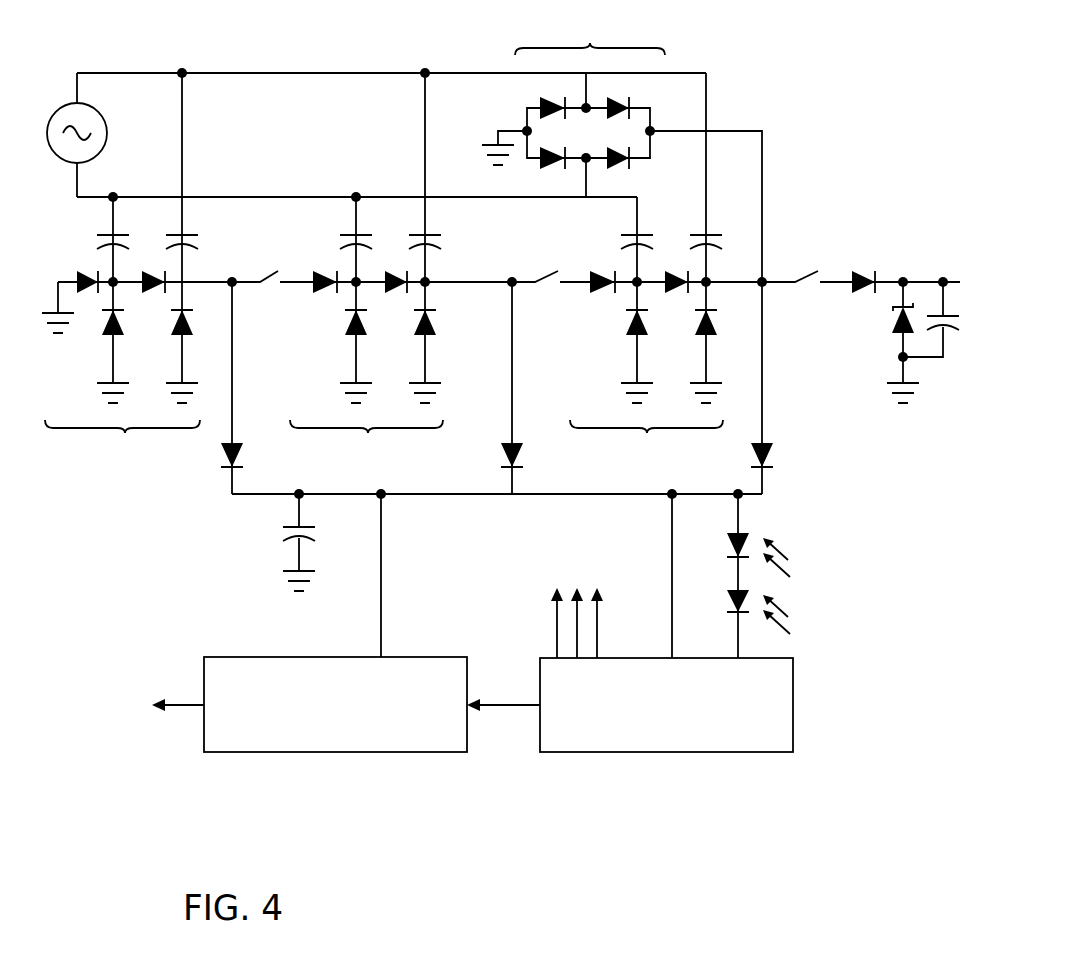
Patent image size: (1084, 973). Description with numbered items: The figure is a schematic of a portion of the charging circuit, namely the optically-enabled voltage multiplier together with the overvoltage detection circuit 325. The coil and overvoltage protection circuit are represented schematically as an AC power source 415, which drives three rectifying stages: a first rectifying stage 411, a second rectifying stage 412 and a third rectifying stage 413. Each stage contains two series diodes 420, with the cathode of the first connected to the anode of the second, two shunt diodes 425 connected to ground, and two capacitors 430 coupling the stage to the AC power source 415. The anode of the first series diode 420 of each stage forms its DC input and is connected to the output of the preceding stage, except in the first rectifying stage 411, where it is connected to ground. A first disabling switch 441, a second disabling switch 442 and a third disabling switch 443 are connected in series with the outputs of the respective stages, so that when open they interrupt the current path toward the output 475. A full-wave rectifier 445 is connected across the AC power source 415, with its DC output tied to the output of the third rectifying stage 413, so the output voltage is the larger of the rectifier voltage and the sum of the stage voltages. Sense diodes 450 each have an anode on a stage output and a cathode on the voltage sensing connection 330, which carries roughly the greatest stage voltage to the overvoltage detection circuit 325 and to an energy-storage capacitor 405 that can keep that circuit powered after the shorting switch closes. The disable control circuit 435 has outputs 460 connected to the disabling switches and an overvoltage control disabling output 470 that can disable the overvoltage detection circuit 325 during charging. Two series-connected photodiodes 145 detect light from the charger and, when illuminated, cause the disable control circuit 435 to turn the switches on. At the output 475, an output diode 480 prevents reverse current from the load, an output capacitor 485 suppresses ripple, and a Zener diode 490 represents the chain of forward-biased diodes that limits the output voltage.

The AC power source 415 is at (104, 149).
The first rectifying stage 411 is at (137, 270).
The second rectifying stage 412 is at (396, 270).
The third rectifying stage 413 is at (661, 270).
The capacitors 430 is at (696, 230).
The series diodes 420 is at (602, 270).
The shunt diodes 425 is at (759, 342).
The first disabling switch 441 is at (266, 273).
The second disabling switch 442 is at (543, 273).
The third disabling switch 443 is at (805, 273).
The full-wave rectifier 445 is at (622, 254).
The sense diodes 450 is at (792, 474).
The energy-storage capacitor 405 is at (282, 535).
The voltage sensing connection 330 is at (444, 497).
The overvoltage detection circuit 325 is at (258, 656).
The disable control circuit 435 is at (793, 706).
The overvoltage control disabling output 470 is at (512, 706).
The outputs 460 is at (555, 622).
The photodiodes 145 is at (700, 555).
The output diode 480 is at (866, 266).
The output 475 is at (944, 276).
The Zener diode 490 is at (888, 322).
The output capacitor 485 is at (950, 335).